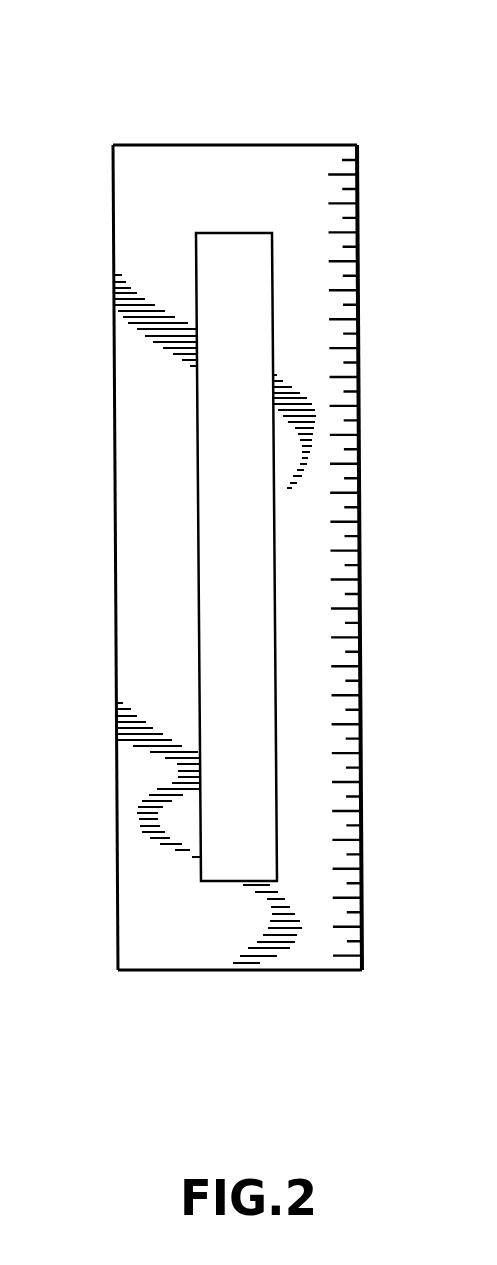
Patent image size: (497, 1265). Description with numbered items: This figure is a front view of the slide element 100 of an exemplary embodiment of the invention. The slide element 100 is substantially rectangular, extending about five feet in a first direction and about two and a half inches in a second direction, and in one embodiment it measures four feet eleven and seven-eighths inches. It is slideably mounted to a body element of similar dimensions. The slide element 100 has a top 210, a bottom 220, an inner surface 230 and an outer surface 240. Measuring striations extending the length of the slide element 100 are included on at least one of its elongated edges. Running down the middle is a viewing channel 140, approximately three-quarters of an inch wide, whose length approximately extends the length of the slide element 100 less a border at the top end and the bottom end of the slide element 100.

The slide element 100 is at (107, 68).
The viewing channel 140 is at (213, 503).
The top 210 is at (310, 145).
The bottom 220 is at (307, 972).
The inner surface 230 is at (116, 527).
The outer surface 240 is at (151, 644).